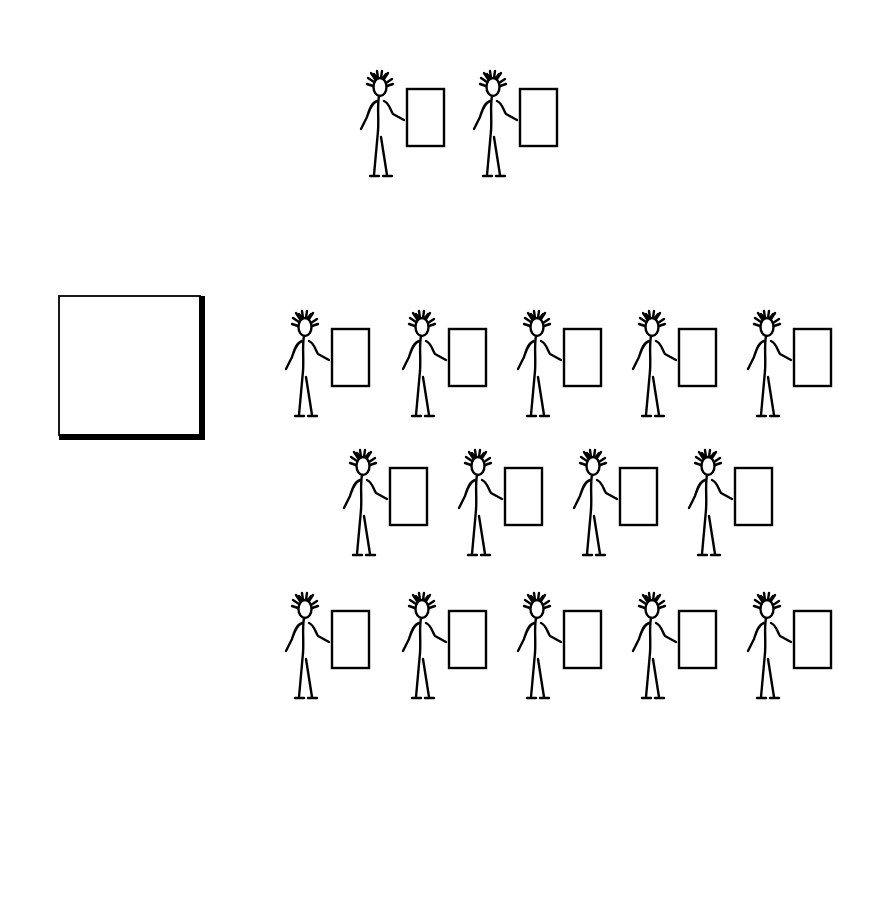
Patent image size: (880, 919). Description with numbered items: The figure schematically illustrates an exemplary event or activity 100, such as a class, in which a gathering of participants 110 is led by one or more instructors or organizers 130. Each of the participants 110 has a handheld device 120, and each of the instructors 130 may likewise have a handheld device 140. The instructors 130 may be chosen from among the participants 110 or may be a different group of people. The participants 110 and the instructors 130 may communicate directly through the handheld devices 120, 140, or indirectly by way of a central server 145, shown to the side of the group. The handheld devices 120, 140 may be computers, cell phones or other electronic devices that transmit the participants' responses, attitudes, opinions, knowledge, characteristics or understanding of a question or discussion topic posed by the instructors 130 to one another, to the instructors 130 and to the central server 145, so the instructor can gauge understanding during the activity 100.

The event or activity 100 is at (672, 101).
The participants 110 is at (540, 709).
The handheld device 120 is at (808, 328).
The instructors or organizers 130 is at (382, 66).
The handheld device 140 is at (425, 147).
The central server 145 is at (112, 410).